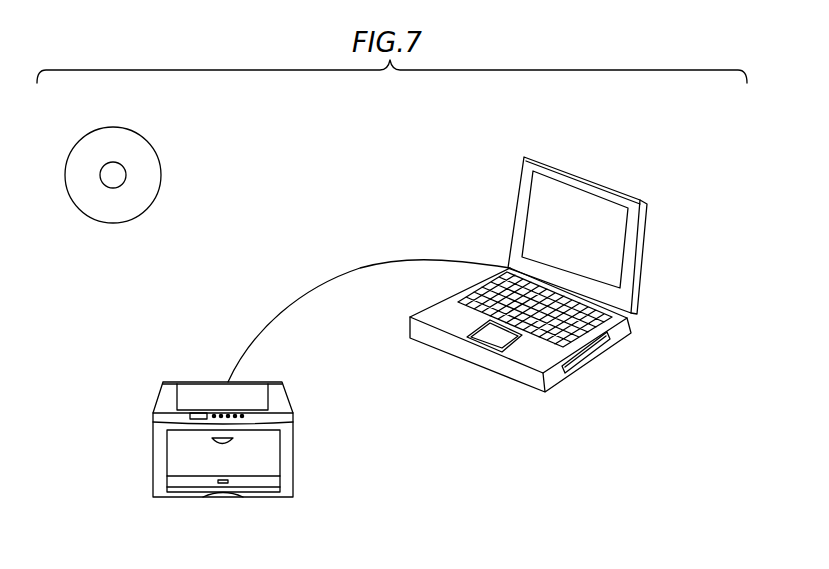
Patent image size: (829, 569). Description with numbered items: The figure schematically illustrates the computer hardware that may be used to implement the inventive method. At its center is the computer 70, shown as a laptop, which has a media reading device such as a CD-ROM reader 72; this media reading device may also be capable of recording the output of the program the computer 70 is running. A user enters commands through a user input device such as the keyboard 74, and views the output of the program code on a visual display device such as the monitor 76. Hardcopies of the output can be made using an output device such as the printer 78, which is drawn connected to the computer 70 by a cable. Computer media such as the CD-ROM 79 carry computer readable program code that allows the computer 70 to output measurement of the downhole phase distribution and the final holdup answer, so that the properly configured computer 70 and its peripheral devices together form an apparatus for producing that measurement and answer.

The computer 70 is at (580, 268).
The CD-ROM reader 72 is at (602, 350).
The keyboard 74 is at (545, 340).
The monitor 76 is at (575, 207).
The printer 78 is at (295, 447).
The CD-ROM 79 is at (158, 153).